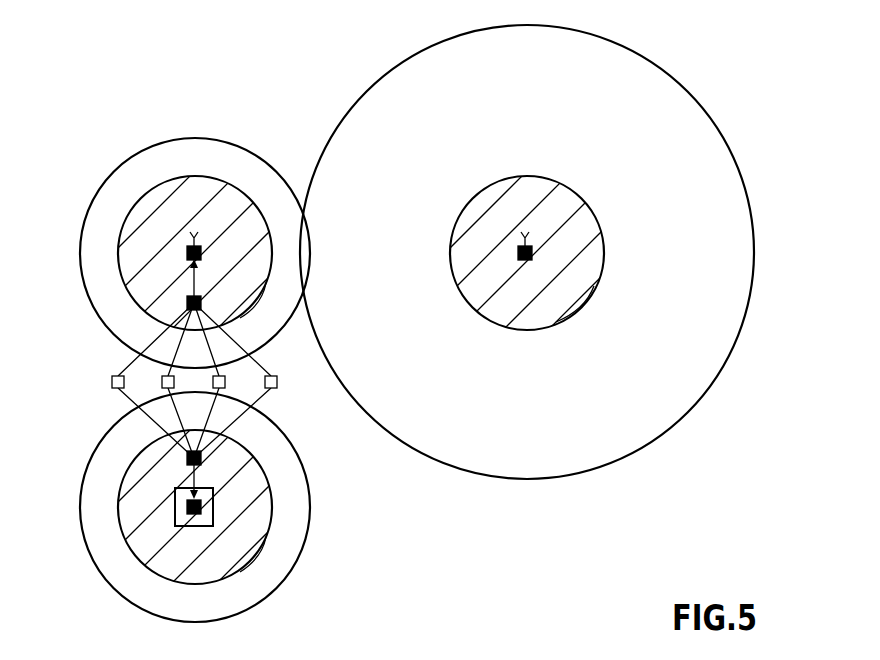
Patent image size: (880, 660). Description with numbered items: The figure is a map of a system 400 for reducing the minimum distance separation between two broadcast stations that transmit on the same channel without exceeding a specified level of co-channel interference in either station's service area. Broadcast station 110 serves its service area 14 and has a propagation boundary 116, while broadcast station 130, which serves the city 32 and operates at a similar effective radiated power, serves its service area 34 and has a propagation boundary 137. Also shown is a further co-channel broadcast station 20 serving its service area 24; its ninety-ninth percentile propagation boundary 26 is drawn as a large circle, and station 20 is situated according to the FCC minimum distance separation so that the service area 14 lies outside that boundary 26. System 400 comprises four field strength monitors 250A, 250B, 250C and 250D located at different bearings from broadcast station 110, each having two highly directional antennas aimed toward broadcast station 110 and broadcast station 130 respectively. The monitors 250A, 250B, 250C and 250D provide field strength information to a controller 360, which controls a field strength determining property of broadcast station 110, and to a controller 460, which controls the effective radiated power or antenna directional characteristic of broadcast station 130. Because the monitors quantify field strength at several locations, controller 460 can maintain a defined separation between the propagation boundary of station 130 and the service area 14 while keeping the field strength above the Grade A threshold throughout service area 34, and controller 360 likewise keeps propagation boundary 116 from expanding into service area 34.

The 99th percentile propagation boundary 26 is at (398, 60).
The service area 24 is at (470, 196).
The broadcast station 20 is at (532, 246).
The propagation boundary 116 is at (157, 142).
The service area 14 is at (141, 202).
The broadcast station 110 is at (201, 246).
The controller 360 is at (202, 303).
The propagation boundary 137 is at (82, 507).
The service area 34 is at (124, 477).
The controller 460 is at (202, 458).
The broadcast station 130 is at (213, 490).
The city 32 is at (177, 527).
The system 400 is at (452, 606).
The field strength monitor 250A is at (295, 366).
The field strength monitor 250B is at (222, 389).
The field strength monitor 250C is at (169, 389).
The field strength monitor 250D is at (110, 381).